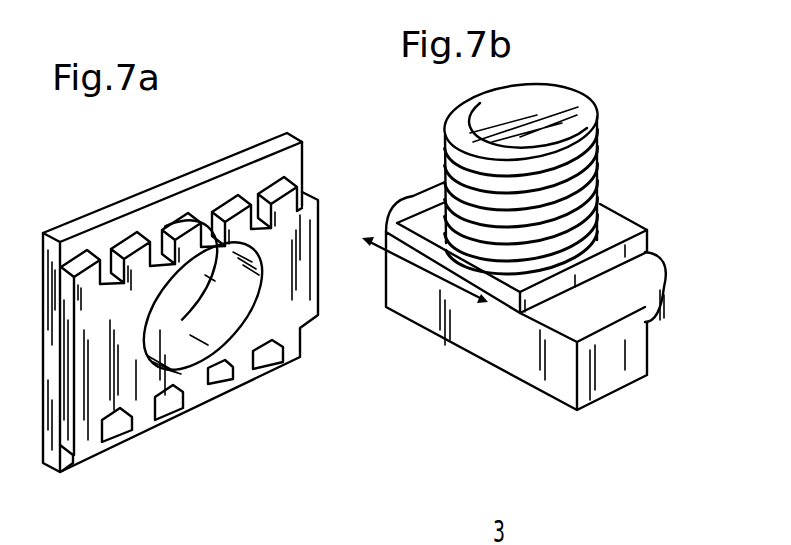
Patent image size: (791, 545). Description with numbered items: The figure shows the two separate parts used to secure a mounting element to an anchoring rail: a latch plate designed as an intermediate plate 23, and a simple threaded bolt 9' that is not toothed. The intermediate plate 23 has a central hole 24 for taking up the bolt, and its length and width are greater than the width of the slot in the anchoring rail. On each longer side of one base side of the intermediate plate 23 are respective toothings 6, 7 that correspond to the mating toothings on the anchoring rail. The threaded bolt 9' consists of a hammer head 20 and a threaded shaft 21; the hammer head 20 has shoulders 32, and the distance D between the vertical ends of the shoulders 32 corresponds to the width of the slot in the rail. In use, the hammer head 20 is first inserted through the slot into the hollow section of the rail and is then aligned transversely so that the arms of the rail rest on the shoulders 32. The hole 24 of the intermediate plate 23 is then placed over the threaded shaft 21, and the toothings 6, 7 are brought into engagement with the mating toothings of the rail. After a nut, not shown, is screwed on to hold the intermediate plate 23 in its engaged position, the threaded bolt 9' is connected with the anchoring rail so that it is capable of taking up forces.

In FIG. 7A, the intermediate plate 23 is at (213, 149).
In FIG. 7A, the toothing 6 is at (158, 223).
In FIG. 7A, the toothing 7 is at (158, 427).
In FIG. 7A, the central hole 24 is at (180, 328).
In FIG. 7B, the hammer head 20 is at (495, 350).
In FIG. 7B, the shoulders 32 is at (413, 203).
In FIG. 7B, the distance D is at (410, 265).
In FIG. 7B, the threaded shaft 21 is at (572, 150).
In FIG. 7B, the threaded bolt 9' is at (643, 162).